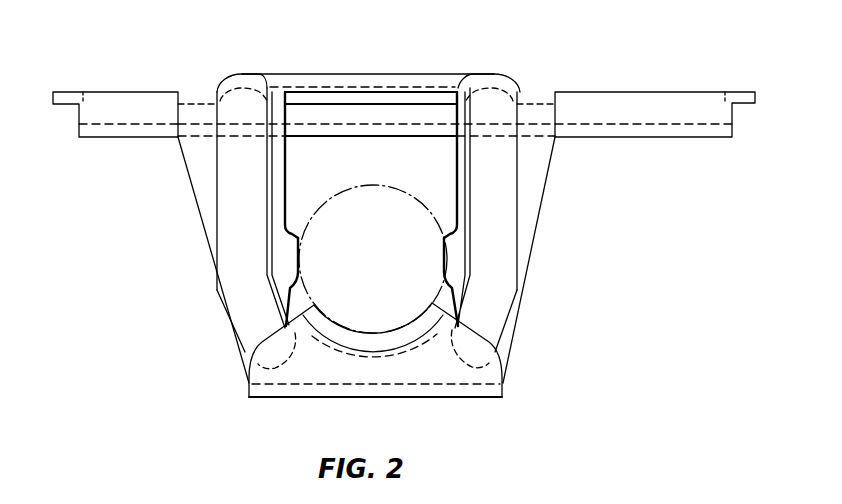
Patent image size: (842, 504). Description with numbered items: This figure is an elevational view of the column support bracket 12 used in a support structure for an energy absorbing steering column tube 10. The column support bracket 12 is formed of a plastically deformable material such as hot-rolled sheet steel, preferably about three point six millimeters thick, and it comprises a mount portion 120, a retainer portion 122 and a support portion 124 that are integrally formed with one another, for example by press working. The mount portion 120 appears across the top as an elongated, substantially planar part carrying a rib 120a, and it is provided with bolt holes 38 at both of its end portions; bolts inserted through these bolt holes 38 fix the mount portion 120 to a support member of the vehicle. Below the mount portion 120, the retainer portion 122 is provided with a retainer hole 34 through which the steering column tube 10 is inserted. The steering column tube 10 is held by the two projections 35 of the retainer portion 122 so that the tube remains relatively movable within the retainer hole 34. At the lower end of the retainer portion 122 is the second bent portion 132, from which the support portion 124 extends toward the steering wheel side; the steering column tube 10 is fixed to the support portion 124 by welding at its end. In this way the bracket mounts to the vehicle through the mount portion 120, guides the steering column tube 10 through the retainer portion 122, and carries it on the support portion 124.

The steering column tube 10 is at (403, 192).
The column support bracket 12 is at (229, 70).
The retainer hole 34 is at (288, 173).
The projections 35 is at (297, 228).
The bolt holes 38 is at (130, 97).
The mount portion 120 is at (560, 90).
The rib 120a is at (357, 78).
The retainer portion 122 is at (530, 212).
The support portion 124 is at (443, 372).
The second bent portion 132 is at (325, 400).